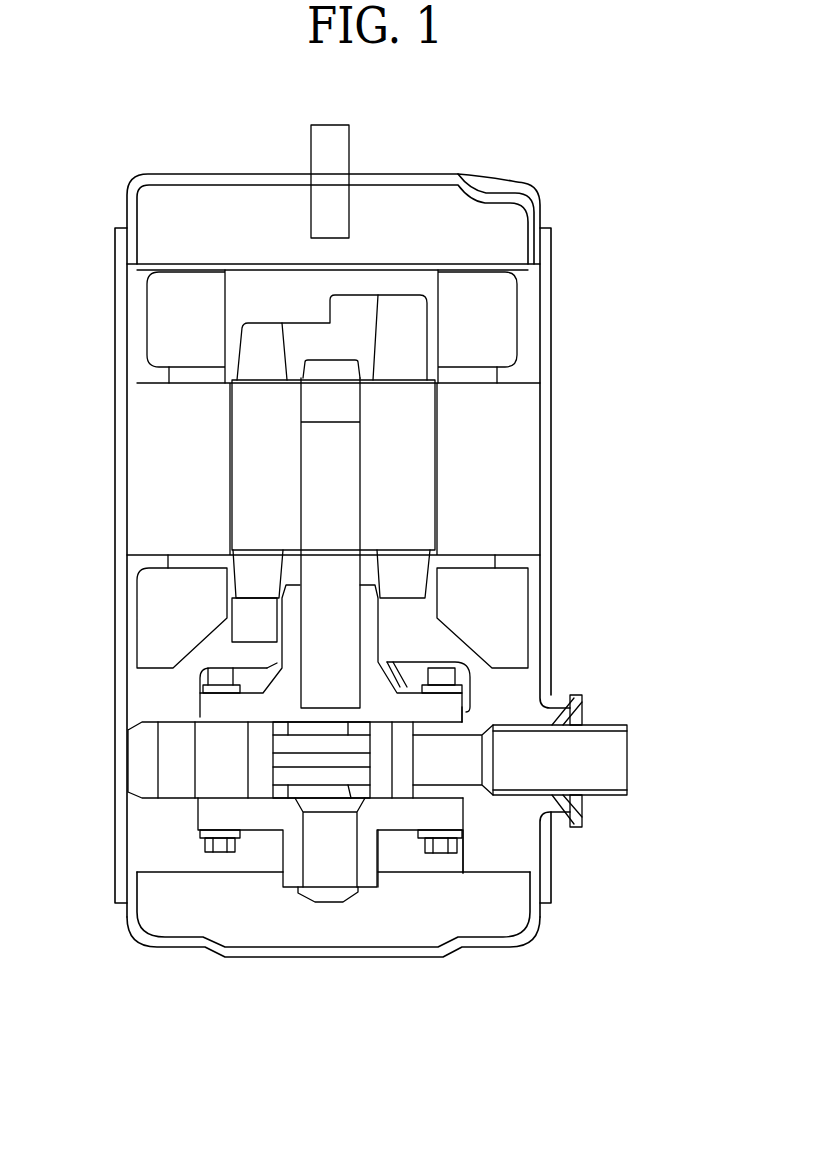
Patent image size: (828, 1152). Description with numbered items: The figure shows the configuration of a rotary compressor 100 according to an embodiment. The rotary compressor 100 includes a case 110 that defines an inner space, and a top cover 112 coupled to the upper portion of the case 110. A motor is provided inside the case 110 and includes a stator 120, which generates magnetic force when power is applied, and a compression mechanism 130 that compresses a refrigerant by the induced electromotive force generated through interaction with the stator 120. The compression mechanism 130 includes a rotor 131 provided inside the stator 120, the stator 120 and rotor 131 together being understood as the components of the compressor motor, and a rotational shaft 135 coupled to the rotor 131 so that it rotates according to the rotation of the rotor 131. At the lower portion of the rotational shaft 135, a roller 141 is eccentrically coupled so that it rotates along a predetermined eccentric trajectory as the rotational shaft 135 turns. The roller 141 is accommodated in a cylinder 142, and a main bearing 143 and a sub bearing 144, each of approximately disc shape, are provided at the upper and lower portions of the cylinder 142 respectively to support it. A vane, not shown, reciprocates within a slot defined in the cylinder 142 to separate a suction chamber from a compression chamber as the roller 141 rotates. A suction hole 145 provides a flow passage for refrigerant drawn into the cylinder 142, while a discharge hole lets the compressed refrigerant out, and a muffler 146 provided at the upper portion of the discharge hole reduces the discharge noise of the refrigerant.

The rotary compressor 100 is at (535, 171).
The case 110 is at (126, 505).
The top cover 112 is at (415, 177).
The stator 120 is at (527, 408).
The compression mechanism 130 is at (607, 487).
The rotor 131 is at (418, 482).
The rotational shaft 135 is at (338, 525).
The roller 141 is at (217, 782).
The cylinder 142 is at (213, 748).
The main bearing 143 is at (470, 711).
The sub bearing 144 is at (407, 818).
The suction hole 145 is at (612, 758).
The muffler 146 is at (200, 678).